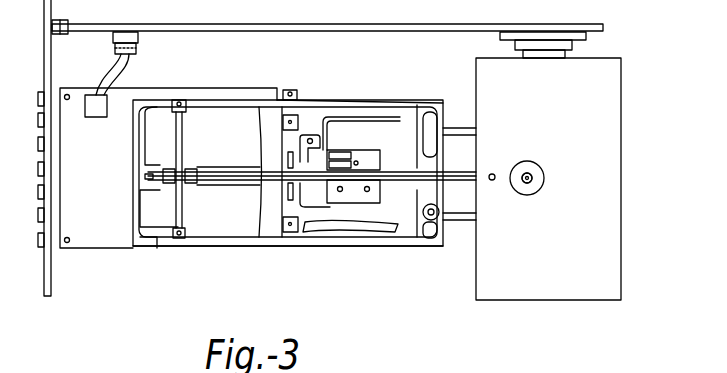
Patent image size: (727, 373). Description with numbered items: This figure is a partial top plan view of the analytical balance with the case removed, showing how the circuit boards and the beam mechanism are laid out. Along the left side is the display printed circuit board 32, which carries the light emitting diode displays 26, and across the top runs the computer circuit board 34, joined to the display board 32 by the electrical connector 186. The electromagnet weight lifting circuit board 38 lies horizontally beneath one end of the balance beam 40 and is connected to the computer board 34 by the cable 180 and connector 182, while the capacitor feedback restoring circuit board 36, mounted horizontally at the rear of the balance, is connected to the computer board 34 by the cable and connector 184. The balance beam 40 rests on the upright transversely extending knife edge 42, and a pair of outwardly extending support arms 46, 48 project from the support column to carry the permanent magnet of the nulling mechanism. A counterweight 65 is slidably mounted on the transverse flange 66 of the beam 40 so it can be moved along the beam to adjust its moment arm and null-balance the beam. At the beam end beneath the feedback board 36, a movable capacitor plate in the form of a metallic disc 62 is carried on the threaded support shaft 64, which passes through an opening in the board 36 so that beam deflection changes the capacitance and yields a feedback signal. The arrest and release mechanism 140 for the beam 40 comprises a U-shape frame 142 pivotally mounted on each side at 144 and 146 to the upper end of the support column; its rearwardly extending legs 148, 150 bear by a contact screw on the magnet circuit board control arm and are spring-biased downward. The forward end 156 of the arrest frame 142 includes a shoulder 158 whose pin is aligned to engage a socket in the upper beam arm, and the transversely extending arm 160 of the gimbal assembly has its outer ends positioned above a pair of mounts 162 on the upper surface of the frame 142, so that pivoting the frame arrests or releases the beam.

The display printed circuit board 32 is at (46, 39).
The light emitting diode displays 26 is at (40, 118).
The computer circuit board 34 is at (278, 24).
The electrical connector 186 is at (62, 20).
The connector 182 is at (167, 0).
The cable 180 is at (112, 66).
The cable and connector 184 is at (568, 3).
The capacitor feedback restoring circuit board 36 is at (590, 90).
The electromagnet weight lifting circuit board 38 is at (88, 242).
The arrest and release mechanism 140 is at (312, 82).
The U-shape frame 142 is at (337, 103).
The pivot mount 146 is at (292, 90).
The rearwardly extending leg 150 is at (390, 110).
The counterweight 65 is at (378, 152).
The support arm 48 is at (470, 83).
The forward end of the arrest frame 156 is at (135, 135).
The transversely extending arm 160 is at (183, 146).
The mounts 162 is at (180, 100).
The shoulder 158 is at (148, 182).
The balance beam 40 is at (247, 181).
The knife edge 42 is at (287, 192).
The pivot mount 144 is at (320, 248).
The rearwardly extending leg 148 is at (363, 250).
The support arm 46 is at (460, 220).
The transverse flange 66 is at (452, 165).
The metallic disc 62 is at (527, 161).
The threaded support shaft 64 is at (544, 178).